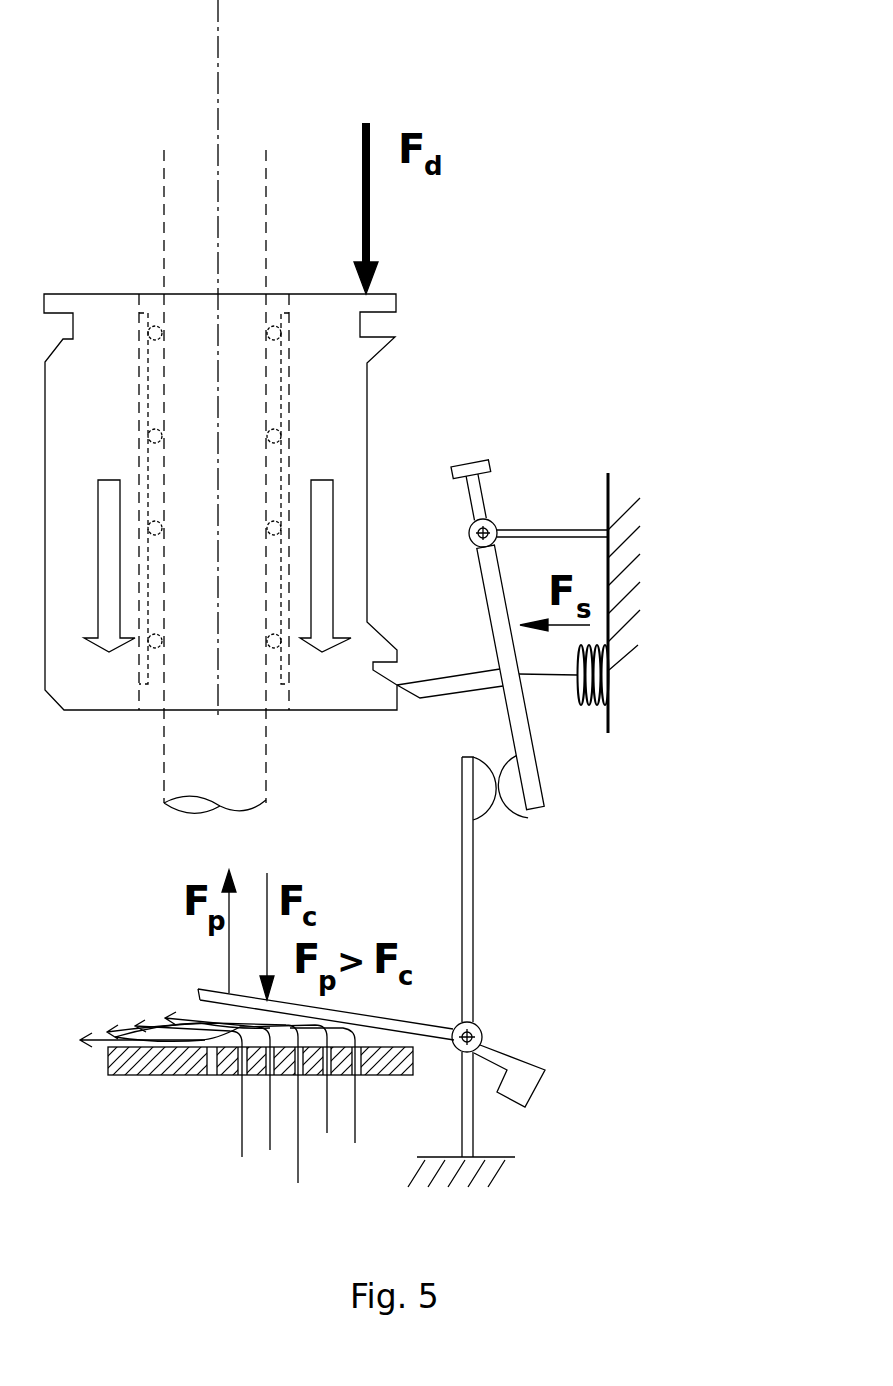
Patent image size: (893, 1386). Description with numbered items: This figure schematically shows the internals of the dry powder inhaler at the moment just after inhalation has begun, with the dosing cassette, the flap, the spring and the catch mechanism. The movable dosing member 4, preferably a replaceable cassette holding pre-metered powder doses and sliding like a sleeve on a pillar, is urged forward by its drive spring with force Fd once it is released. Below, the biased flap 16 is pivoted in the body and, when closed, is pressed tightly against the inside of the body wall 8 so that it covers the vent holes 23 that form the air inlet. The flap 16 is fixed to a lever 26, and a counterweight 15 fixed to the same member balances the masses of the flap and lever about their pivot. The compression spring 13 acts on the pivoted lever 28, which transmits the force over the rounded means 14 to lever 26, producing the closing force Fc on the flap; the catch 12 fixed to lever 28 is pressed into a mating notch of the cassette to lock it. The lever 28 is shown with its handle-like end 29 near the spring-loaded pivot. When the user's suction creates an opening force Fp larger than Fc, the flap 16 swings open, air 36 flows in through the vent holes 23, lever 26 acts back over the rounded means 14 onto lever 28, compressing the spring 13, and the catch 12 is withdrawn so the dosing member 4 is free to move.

The dosing member 4 is at (396, 294).
The actuating lever 29 is at (488, 473).
The catch 12 is at (468, 678).
The compression spring 13 is at (577, 703).
The rounded means 14 is at (490, 815).
The lever 28 is at (537, 757).
The lever 26 is at (477, 958).
The counterweight 15 is at (540, 1083).
The flap 16 is at (207, 988).
The vent holes 23 is at (215, 1077).
The body wall 8 is at (380, 1077).
The air 36 is at (217, 1114).